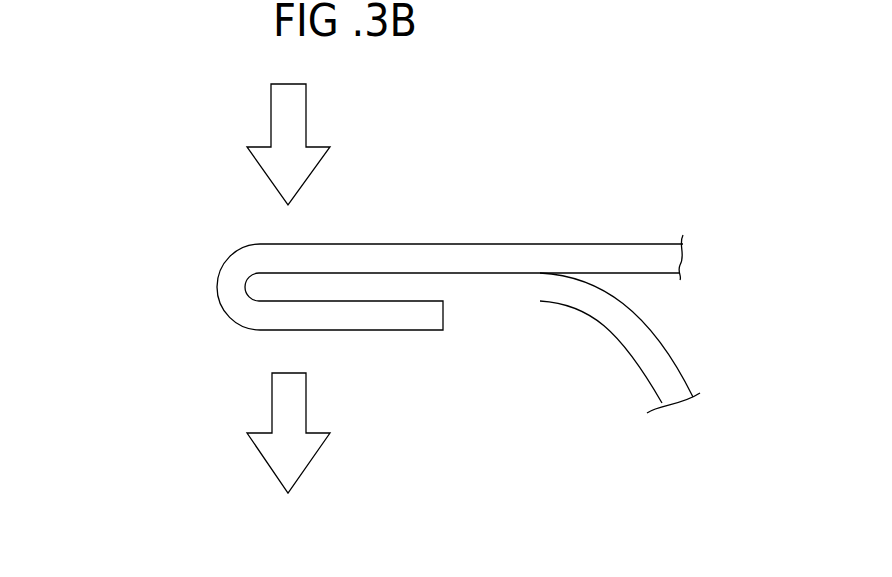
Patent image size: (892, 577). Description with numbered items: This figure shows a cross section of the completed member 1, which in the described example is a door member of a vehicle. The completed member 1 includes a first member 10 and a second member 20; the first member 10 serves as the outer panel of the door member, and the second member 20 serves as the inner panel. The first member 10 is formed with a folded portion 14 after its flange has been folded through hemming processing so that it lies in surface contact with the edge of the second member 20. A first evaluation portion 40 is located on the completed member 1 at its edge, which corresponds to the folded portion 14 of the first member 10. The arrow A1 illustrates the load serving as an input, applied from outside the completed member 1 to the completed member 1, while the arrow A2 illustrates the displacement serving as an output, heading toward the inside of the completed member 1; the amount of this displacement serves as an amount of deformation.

The completed member 1 is at (600, 170).
The first member 10 is at (540, 243).
The folded portion 14 is at (190, 293).
The second member 20 is at (578, 310).
The first evaluation portion 40 is at (209, 229).
The arrow A1 is at (307, 95).
The arrow A2 is at (307, 388).